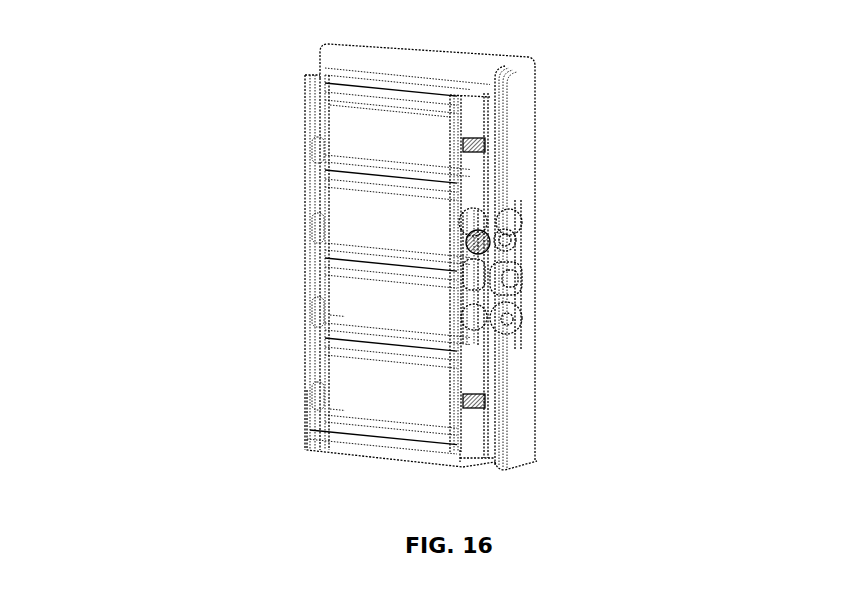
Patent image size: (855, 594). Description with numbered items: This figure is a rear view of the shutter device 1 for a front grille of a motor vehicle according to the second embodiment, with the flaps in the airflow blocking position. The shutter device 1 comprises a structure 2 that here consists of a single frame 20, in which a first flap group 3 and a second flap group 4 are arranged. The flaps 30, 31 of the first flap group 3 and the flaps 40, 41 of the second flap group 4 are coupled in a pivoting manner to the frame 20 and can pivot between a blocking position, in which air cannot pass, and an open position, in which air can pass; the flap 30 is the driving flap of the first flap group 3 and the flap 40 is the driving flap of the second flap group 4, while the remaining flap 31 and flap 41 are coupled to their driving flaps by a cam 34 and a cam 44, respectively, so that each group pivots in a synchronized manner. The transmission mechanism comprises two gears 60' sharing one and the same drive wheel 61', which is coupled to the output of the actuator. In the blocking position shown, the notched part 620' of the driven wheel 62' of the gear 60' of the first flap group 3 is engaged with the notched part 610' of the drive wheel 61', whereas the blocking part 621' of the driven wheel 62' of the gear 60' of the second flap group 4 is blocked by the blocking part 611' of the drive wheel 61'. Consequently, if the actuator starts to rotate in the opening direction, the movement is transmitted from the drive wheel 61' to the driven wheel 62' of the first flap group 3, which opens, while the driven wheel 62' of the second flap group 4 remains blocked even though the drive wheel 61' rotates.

The shutter device 1 is at (278, 252).
The structure 2 is at (525, 107).
The first flap group 3 is at (284, 160).
The second flap group 4 is at (290, 366).
The frame 20 is at (432, 83).
The flap 30 is at (350, 210).
The flap 31 is at (343, 118).
The cam 34 is at (318, 125).
The flap 40 is at (360, 316).
The flap 41 is at (408, 413).
The cam 44 is at (333, 316).
The gear 60' is at (431, 277).
The drive wheel 61' is at (528, 277).
The driven wheel 62' is at (544, 290).
The notched part 610' is at (577, 278).
The blocking part 611' is at (592, 293).
The notched part 620' is at (525, 223).
The blocking part 621' is at (543, 336).